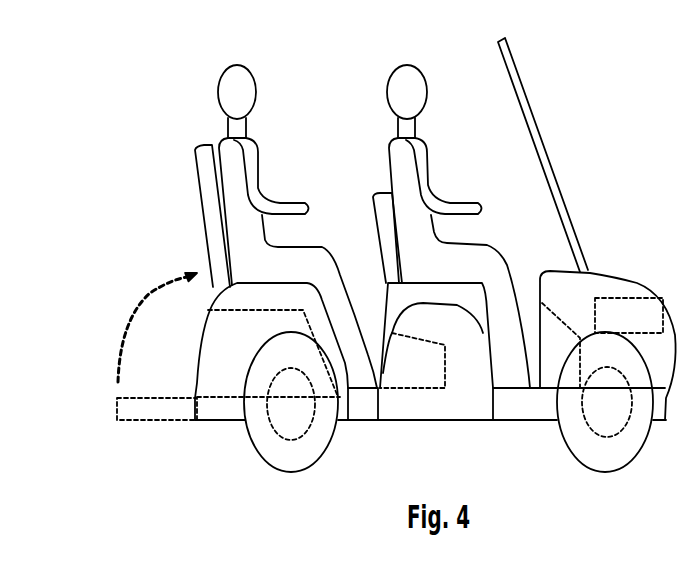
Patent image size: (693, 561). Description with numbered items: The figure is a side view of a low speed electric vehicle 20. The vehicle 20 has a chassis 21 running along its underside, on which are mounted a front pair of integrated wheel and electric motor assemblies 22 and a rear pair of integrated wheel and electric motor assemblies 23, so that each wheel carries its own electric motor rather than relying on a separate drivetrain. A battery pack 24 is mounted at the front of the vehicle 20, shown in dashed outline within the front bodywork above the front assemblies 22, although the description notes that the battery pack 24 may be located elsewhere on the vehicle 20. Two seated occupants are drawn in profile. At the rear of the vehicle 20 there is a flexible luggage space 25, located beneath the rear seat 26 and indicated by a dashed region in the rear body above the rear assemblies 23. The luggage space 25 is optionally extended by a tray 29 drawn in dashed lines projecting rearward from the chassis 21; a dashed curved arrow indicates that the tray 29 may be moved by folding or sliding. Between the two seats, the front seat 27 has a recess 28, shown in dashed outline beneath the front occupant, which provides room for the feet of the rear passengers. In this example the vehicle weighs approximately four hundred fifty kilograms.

The low speed electric vehicle 20 is at (590, 117).
The chassis 21 is at (515, 422).
The front pair of integrated wheel and electric motor assemblies 22 is at (649, 462).
The rear pair of integrated wheel and electric motor assemblies 23 is at (243, 448).
The battery pack 24 is at (646, 303).
The flexible luggage space 25 is at (212, 348).
The rear seat 26 is at (228, 279).
The front seat 27 is at (394, 412).
The recess 28 is at (402, 347).
The tray 29 is at (136, 431).